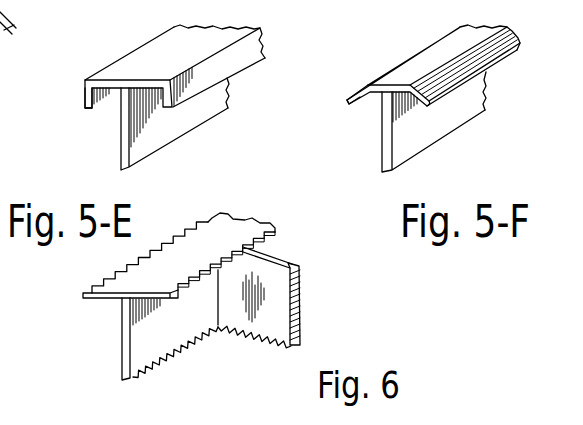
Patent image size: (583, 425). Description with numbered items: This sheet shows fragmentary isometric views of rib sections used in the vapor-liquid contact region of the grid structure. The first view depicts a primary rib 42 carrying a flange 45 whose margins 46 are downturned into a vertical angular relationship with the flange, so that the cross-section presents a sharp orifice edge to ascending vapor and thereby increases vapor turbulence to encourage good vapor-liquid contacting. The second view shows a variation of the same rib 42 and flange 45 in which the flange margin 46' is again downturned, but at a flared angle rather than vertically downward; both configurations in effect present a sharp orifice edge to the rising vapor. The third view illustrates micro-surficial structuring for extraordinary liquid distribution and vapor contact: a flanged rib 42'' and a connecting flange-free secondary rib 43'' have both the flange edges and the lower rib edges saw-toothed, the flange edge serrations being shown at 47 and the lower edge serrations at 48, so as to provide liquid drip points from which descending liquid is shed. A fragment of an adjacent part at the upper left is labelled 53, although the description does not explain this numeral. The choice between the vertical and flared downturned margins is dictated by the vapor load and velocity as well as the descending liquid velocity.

In FIG. 5-E, the primary rib 42 is at (175, 124).
In FIG. 5-F, the primary rib 42 is at (434, 123).
In FIG. 6, the flanged rib 42'' is at (108, 339).
In FIG. 6, the flange-free secondary rib 43'' is at (279, 296).
In FIG. 5-E, the flange 45 is at (153, 52).
In FIG. 5-F, the flange 45 is at (420, 58).
In FIG. 5-E, the margin 46 is at (79, 98).
In FIG. 5-F, the flange margin 46' is at (331, 103).
In FIG. 6, the saw-toothed flange edge 47 is at (118, 272).
In FIG. 6, the saw-toothed lower rib edge 48 is at (195, 340).
In FIG. 5-E, the connecting strip 53 is at (17, 40).